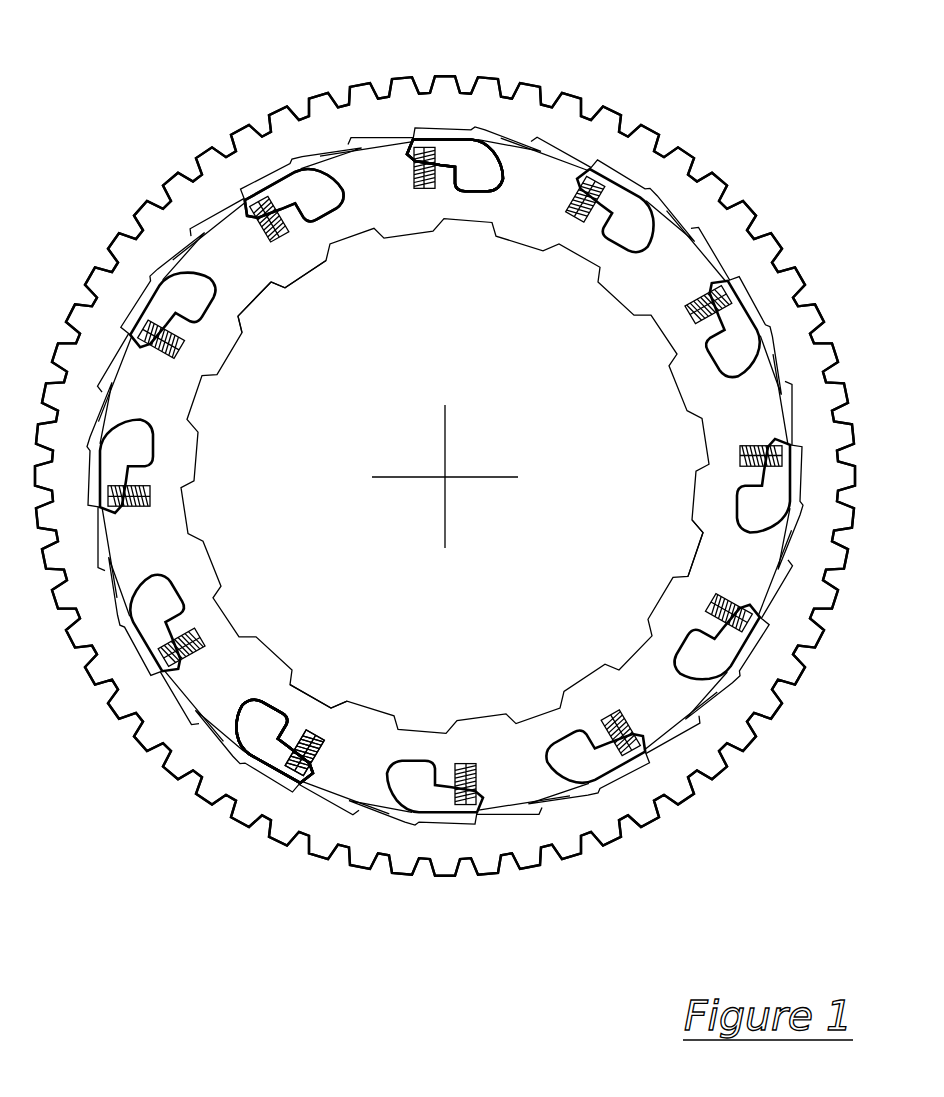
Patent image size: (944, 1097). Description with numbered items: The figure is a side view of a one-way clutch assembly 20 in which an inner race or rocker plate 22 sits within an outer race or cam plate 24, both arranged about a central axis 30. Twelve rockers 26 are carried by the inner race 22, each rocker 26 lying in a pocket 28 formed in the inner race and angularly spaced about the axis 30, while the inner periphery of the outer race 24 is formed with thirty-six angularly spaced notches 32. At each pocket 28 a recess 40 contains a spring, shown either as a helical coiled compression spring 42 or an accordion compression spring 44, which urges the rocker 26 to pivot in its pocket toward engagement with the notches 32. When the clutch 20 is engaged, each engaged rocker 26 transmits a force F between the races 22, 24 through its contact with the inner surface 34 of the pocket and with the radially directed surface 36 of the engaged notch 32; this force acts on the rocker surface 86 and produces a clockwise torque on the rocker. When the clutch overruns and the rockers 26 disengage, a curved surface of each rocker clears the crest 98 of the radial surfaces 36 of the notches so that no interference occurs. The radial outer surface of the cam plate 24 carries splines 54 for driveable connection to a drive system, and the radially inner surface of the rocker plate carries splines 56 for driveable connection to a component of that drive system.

The one-way clutch assembly 20 is at (438, 461).
The inner race or rocker plate 22 is at (713, 437).
The outer race or cam plate 24 is at (108, 285).
The rocker 26 is at (512, 147).
The pocket 28 is at (493, 193).
The central axis 30 is at (448, 482).
The notch 32 is at (187, 250).
The inner surface of the pocket 34 is at (506, 197).
The radially directed surface of the notch 36 is at (428, 117).
The recess 40 is at (297, 153).
The helical coiled compression spring 42 is at (310, 745).
The accordion compression spring 44 is at (300, 265).
The splines 54 is at (755, 210).
The splines 56 is at (697, 478).
The rocker surface 86 is at (413, 142).
The crest 98 is at (270, 128).